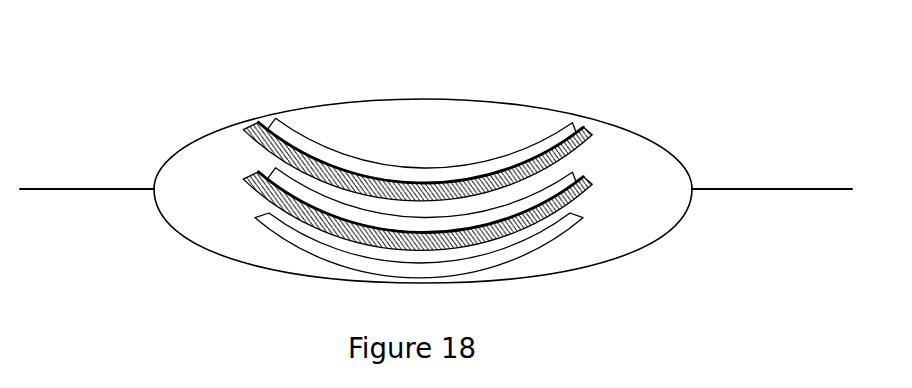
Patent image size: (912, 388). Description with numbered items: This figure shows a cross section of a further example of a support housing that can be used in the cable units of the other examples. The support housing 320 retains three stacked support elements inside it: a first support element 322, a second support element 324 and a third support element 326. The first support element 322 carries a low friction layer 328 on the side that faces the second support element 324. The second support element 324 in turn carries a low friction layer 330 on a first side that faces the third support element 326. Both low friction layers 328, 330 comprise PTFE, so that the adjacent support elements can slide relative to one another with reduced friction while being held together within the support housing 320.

The support housing 320 is at (400, 98).
The first support element 322 is at (571, 126).
The second support element 324 is at (271, 172).
The third support element 326 is at (513, 254).
The low friction layer 328 is at (600, 133).
The low friction layer 330 is at (251, 188).